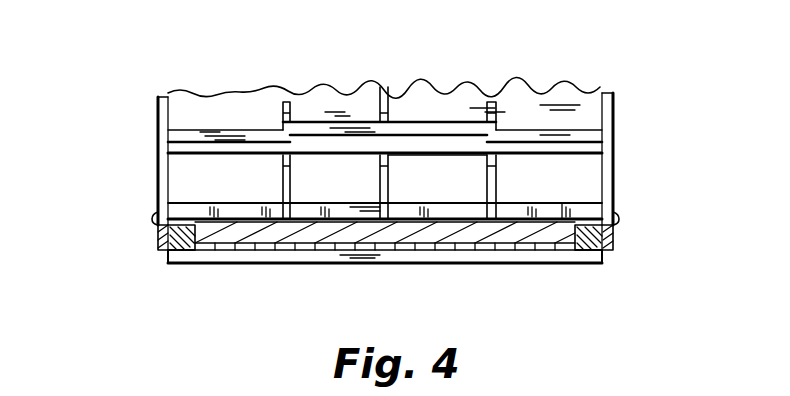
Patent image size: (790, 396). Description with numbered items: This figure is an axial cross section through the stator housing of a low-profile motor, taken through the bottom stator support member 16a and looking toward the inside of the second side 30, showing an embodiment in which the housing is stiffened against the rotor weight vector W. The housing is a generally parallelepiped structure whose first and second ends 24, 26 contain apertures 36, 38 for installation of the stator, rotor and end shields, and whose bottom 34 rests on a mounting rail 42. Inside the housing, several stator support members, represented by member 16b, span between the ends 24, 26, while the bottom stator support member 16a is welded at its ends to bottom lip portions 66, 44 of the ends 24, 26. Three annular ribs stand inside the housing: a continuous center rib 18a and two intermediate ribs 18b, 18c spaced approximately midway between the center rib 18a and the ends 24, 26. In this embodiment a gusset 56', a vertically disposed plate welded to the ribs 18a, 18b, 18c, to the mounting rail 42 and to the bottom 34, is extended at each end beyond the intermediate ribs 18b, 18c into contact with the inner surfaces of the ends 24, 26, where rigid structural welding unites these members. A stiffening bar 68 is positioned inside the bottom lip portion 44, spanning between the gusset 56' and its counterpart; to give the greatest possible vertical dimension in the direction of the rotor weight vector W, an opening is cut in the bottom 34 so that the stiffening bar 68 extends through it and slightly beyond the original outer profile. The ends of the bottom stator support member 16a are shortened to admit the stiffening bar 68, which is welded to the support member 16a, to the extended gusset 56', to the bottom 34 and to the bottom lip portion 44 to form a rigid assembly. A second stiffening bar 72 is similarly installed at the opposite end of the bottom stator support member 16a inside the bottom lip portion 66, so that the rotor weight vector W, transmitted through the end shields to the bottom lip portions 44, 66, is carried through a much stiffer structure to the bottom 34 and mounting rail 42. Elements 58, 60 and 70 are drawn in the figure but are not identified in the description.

The bottom stator support member 16a is at (345, 225).
The stator support member 16b is at (413, 130).
The center rib 18a is at (380, 180).
The intermediate rib 18b is at (282, 182).
The intermediate rib 18c is at (494, 182).
The first end 24 is at (158, 172).
The second end 26 is at (614, 179).
The second side 30 is at (538, 100).
The bottom 34 is at (458, 249).
The aperture 36 is at (158, 215).
The aperture 38 is at (613, 215).
The mounting rail 42 is at (428, 256).
The bottom lip portion 44 is at (613, 246).
The gusset 56' is at (437, 181).
The left shelf 58 is at (200, 135).
The right shelf 60 is at (558, 138).
The bottom lip portion 66 is at (157, 240).
The stiffening bar 68 is at (590, 254).
The right block bottom 70 is at (571, 254).
The second stiffening bar 72 is at (183, 264).
The rotor weight vector W is at (573, 188).